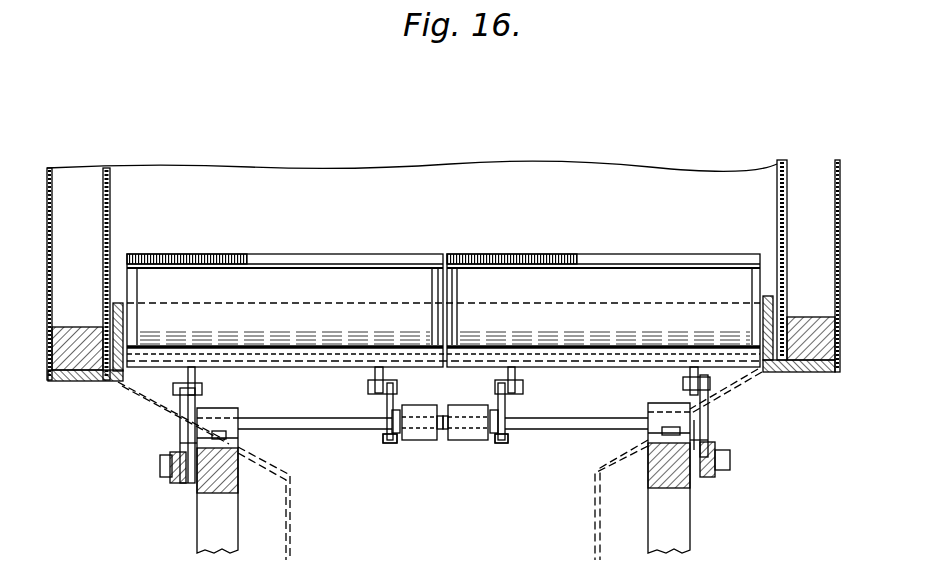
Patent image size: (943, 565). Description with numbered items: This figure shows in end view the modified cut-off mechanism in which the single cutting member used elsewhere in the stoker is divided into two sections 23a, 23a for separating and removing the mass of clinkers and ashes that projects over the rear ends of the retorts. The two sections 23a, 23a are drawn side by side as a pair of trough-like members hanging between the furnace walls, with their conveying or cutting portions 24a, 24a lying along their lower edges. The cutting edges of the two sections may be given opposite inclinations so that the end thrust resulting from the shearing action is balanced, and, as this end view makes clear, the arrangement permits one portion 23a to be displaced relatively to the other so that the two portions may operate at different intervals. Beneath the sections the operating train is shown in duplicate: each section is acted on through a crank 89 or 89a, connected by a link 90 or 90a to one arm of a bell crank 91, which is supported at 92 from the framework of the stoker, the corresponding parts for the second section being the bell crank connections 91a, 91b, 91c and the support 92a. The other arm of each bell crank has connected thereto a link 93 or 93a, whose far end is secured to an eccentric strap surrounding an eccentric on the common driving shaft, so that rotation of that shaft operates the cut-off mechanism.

The cutting member section 23a is at (284, 262).
The conveyor chain 24a is at (318, 356).
The hanger 89a is at (196, 378).
The crank 89 is at (516, 377).
The bearing plate 90a is at (180, 396).
The link 90 is at (506, 396).
The bolt 91b is at (188, 443).
The bolt 91c is at (398, 441).
The bolt 91a is at (497, 441).
The bell crank 91 is at (706, 440).
The shaft 92a is at (316, 430).
The bell crank support 92 is at (579, 430).
The nut 93a is at (186, 484).
The link 93 is at (716, 476).